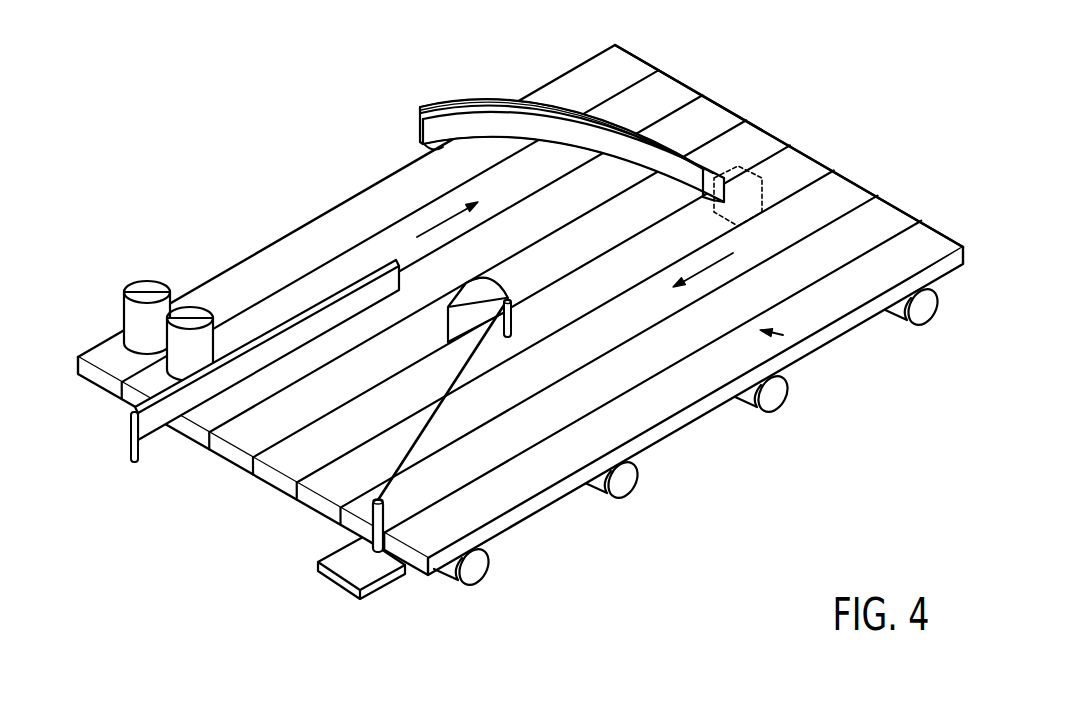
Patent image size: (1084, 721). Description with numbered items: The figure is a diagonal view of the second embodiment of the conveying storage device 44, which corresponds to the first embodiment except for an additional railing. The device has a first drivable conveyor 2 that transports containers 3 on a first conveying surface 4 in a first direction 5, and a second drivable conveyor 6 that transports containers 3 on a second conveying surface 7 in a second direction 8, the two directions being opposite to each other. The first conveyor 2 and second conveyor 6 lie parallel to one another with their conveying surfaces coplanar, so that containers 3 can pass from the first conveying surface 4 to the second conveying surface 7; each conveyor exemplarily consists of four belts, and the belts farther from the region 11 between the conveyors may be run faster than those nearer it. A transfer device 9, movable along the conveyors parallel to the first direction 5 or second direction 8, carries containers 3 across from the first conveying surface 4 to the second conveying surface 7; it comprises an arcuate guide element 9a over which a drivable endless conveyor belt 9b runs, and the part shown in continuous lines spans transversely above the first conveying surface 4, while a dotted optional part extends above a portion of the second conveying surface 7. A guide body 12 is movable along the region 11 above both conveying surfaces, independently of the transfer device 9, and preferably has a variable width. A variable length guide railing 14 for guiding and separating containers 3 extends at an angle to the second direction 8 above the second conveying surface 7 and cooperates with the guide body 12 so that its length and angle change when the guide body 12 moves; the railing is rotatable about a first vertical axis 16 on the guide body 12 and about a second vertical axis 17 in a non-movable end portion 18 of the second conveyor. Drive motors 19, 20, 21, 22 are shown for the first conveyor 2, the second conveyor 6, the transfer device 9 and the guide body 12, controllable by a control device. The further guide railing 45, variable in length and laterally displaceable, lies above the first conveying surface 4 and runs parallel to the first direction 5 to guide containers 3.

The first drivable conveyor 2 is at (697, 87).
The containers 3 is at (177, 348).
The first conveying surface 4 is at (318, 273).
The first direction 5 is at (427, 231).
The second drivable conveyor 6 is at (872, 185).
The second conveying surface 7 is at (783, 335).
The second direction 8 is at (728, 265).
The transfer device 9 is at (406, 126).
The arcuate guide element 9a is at (472, 107).
The drivable endless conveyor belt 9b is at (457, 139).
The region between the conveyors 11 is at (770, 157).
The guide body 12 is at (510, 283).
The variable length guide railing 14 is at (432, 420).
The first vertical axis 16 is at (507, 338).
The second vertical axis 17 is at (372, 538).
The non-movable end portion 18 is at (338, 567).
The drive motor 19 is at (472, 576).
The drive motor 20 is at (621, 488).
The drive motor 21 is at (769, 401).
The drive motor 22 is at (919, 314).
The conveying storage device 44 is at (228, 120).
The further guide railing 45 is at (217, 387).